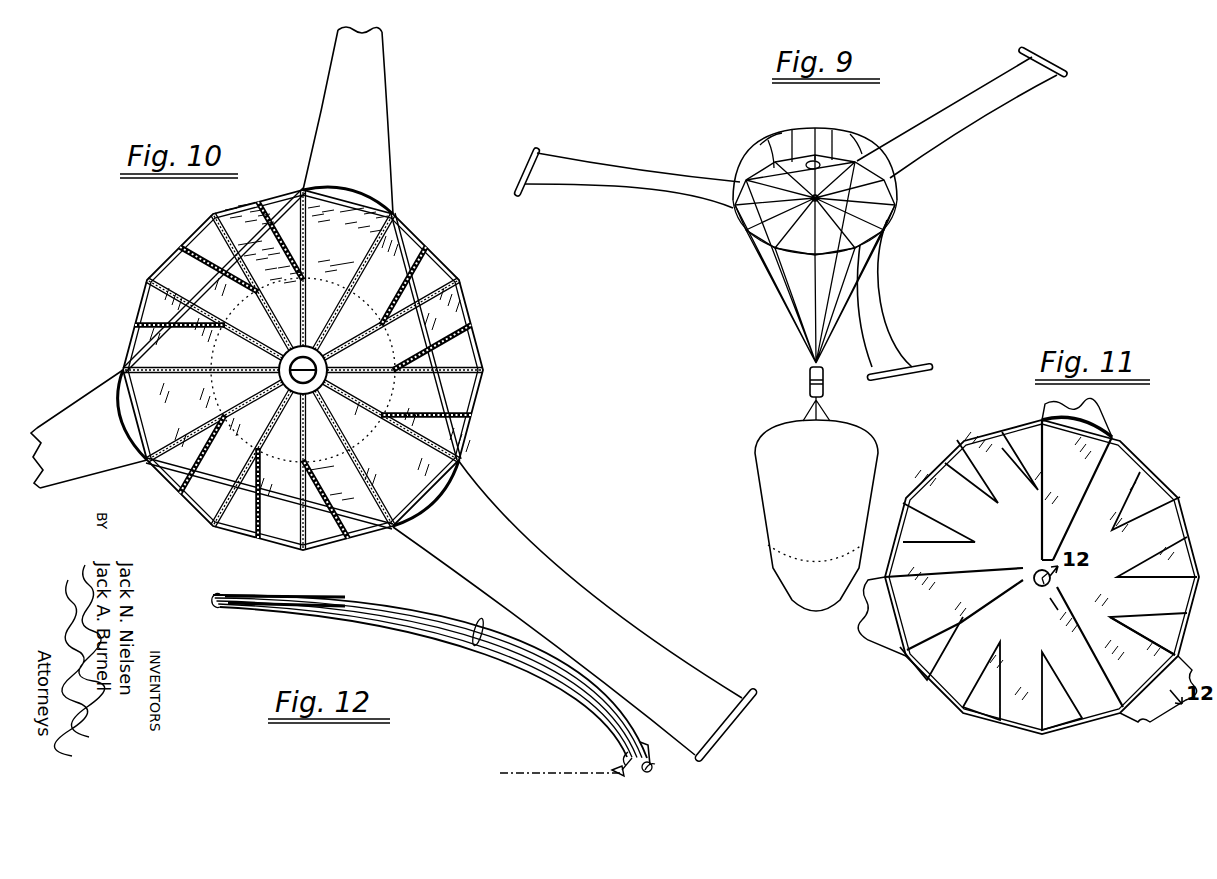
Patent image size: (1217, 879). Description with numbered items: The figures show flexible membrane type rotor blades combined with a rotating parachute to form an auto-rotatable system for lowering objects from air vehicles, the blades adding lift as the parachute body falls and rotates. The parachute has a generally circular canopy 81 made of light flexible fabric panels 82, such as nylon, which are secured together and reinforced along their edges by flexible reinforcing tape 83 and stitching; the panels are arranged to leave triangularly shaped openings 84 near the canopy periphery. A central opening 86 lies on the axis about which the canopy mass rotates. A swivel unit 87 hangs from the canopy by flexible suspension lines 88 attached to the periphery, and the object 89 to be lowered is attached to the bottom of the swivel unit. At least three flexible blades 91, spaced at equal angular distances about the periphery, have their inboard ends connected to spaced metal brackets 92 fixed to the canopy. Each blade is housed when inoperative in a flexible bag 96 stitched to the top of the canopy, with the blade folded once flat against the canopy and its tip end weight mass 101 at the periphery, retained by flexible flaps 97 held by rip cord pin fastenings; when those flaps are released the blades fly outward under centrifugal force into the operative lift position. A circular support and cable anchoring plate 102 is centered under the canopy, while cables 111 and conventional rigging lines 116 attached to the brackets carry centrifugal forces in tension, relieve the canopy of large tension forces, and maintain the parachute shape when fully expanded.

In FIG. 10, the canopy 81 is at (429, 234).
In FIG. 9, the canopy 81 is at (779, 129).
In FIG. 12, the canopy 81 is at (193, 612).
In FIG. 10, the panels 82 is at (310, 352).
In FIG. 11, the panels 82 is at (1048, 581).
In FIG. 10, the flexible reinforcing tape 83 is at (362, 450).
In FIG. 10, the triangularly shaped openings 84 is at (315, 537).
In FIG. 9, the triangularly shaped openings 84 is at (815, 191).
In FIG. 11, the triangularly shaped openings 84 is at (985, 715).
In FIG. 10, the central opening 86 is at (288, 372).
In FIG. 9, the central opening 86 is at (812, 170).
In FIG. 11, the central opening 86 is at (1036, 568).
In FIG. 9, the swivel unit 87 is at (806, 384).
In FIG. 9, the flexible suspension lines 88 is at (880, 242).
In FIG. 9, the object 89 is at (816, 515).
In FIG. 10, the flexible membrane type blades 91 is at (572, 580).
In FIG. 9, the flexible membrane type blades 91 is at (904, 340).
In FIG. 11, the flexible membrane type blades 91 is at (1137, 714).
In FIG. 12, the flexible membrane type blades 91 is at (654, 752).
In FIG. 12, the metal brackets 92 is at (610, 770).
In FIG. 11, the flexible bag 96 is at (1030, 562).
In FIG. 12, the flexible bag 96 is at (602, 682).
In FIG. 12, the flexible flaps 97 is at (626, 750).
In FIG. 10, the tip end weight mass 101 is at (738, 707).
In FIG. 9, the tip end weight mass 101 is at (516, 174).
In FIG. 12, the tip end weight mass 101 is at (656, 770).
In FIG. 10, the circular support and cable anchoring plate 102 is at (300, 388).
In FIG. 9, the circular support and cable anchoring plate 102 is at (816, 198).
In FIG. 10, the cables 111 is at (372, 424).
In FIG. 9, the cables 111 is at (838, 206).
In FIG. 10, the rigging lines 116 is at (287, 502).